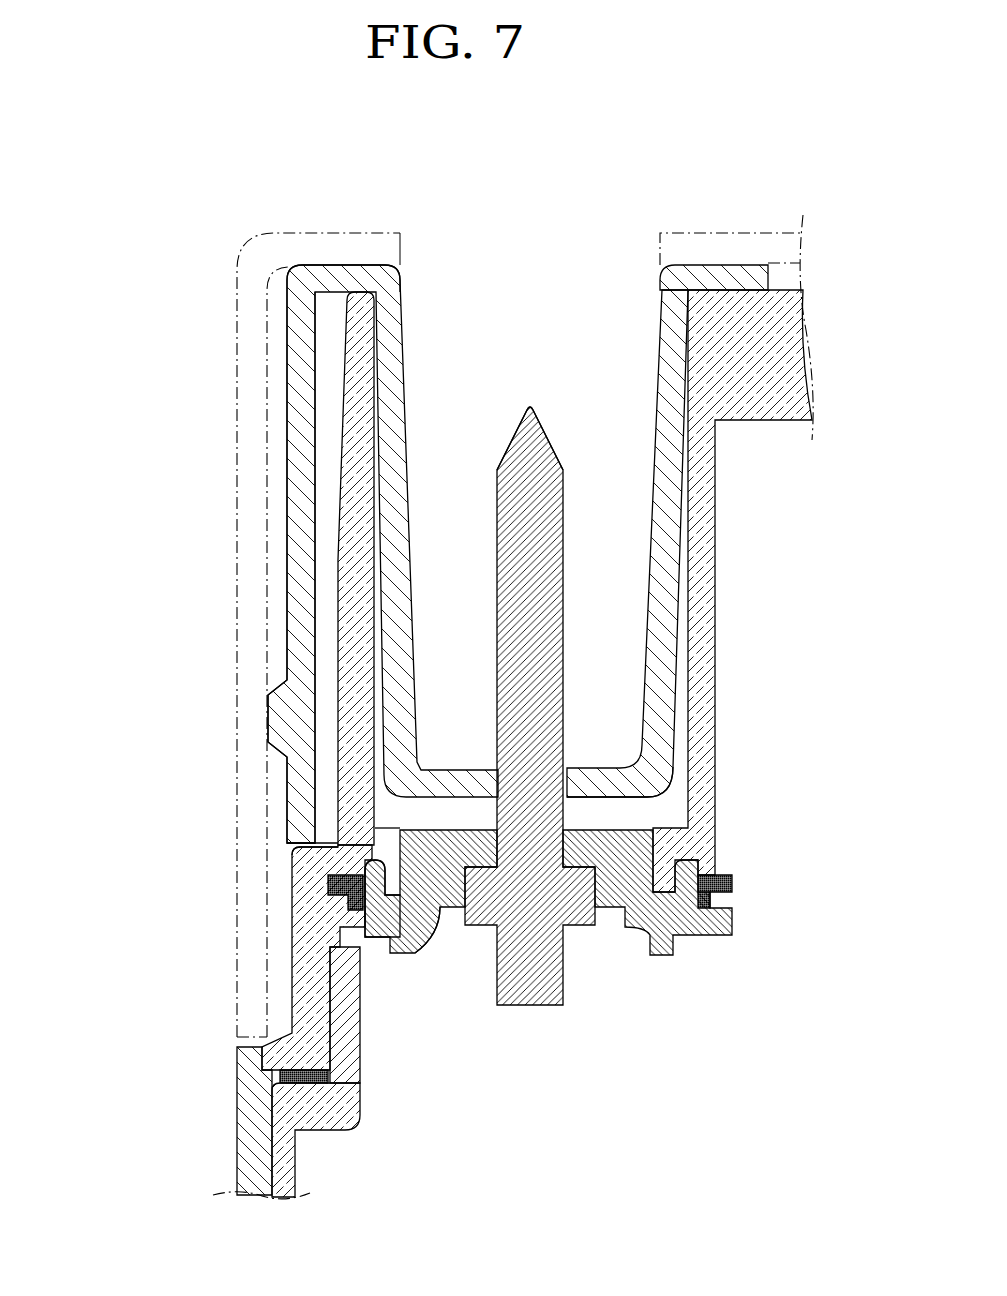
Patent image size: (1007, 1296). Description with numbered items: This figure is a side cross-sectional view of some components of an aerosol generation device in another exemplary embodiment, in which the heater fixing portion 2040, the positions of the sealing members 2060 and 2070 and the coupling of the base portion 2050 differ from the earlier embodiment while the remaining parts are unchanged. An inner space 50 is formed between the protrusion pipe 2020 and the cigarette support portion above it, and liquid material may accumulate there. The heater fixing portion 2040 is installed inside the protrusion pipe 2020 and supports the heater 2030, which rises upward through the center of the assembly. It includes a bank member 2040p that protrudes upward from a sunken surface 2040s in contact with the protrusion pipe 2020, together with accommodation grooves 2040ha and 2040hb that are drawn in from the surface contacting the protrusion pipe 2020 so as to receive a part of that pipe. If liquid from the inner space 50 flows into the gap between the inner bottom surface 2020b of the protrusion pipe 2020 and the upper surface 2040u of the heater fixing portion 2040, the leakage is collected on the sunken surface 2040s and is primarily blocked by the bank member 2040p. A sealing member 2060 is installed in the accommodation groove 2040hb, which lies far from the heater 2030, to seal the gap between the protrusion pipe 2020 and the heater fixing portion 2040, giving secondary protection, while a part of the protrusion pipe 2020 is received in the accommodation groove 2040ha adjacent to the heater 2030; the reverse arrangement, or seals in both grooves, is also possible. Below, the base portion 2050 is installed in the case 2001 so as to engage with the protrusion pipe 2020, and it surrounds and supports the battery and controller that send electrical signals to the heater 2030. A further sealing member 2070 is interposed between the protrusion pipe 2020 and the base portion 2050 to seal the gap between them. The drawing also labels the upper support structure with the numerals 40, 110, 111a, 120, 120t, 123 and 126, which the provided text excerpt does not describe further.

The gasket frame assembly 40 is at (426, 511).
The first frame member 110 is at (668, 355).
The frame body portion 111a is at (655, 432).
The second frame member 120 is at (312, 511).
The frame member wall 120t is at (298, 456).
The frame top portion 123 is at (375, 278).
The frame insert 126 is at (370, 400).
The inner space 50 is at (598, 818).
The case 2001 is at (237, 1157).
The protrusion pipe 2020 is at (263, 908).
The inner bottom surface 2020b is at (330, 788).
The heater 2030 is at (556, 982).
The heater fixing portion 2040 is at (443, 727).
The upper surface 2040u is at (466, 828).
The bank member 2040p is at (294, 858).
The accommodation groove 2040ha is at (392, 903).
The accommodation groove 2040hb is at (345, 964).
The sunken surface 2040s is at (414, 932).
The base portion 2050 is at (305, 1114).
The sealing member 2060 is at (327, 886).
The sealing member 2070 is at (330, 1078).